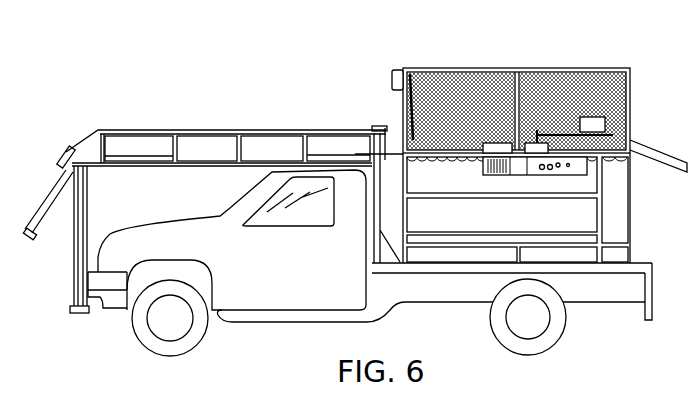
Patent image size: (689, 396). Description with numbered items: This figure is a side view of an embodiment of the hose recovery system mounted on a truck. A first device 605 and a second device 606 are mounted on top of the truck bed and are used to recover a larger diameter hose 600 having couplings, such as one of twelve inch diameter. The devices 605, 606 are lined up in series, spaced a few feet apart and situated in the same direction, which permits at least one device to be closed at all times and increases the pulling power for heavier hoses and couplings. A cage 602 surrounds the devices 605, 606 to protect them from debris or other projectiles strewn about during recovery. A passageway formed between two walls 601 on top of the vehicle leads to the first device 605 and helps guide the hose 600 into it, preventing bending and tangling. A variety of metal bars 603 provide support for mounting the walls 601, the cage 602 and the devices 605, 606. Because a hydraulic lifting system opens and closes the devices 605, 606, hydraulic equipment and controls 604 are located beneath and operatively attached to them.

The hose 600 is at (45, 197).
The walls 601 is at (230, 129).
The cage 602 is at (505, 68).
The metal bars 603 is at (72, 292).
The hydraulic equipment and controls 604 is at (517, 177).
The first device 605 is at (417, 68).
The second device 606 is at (592, 117).